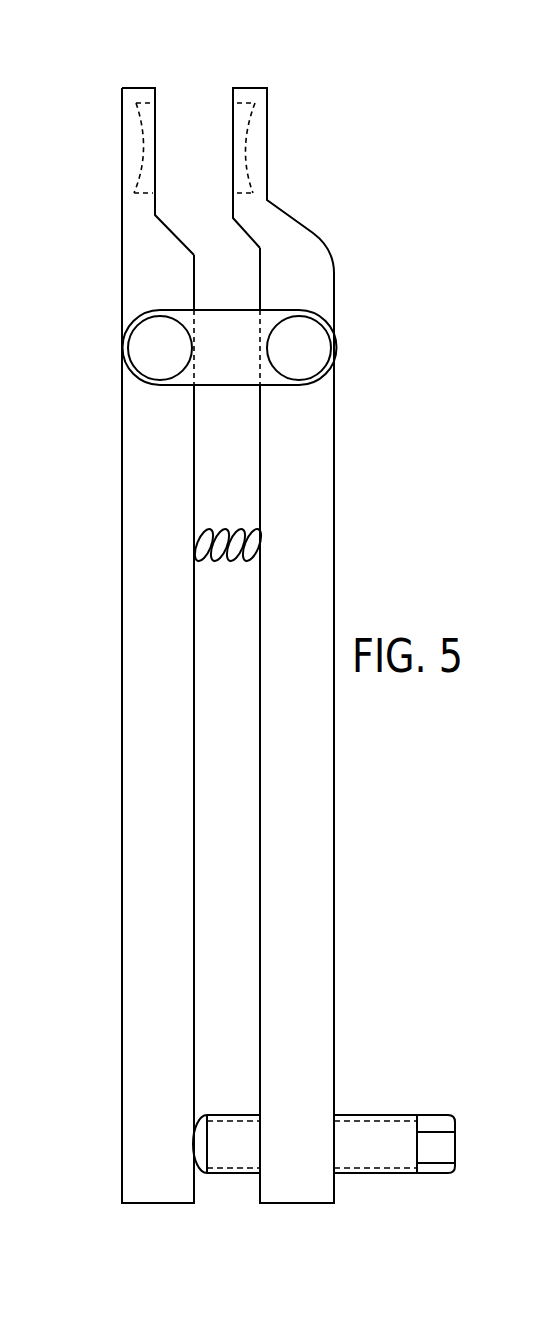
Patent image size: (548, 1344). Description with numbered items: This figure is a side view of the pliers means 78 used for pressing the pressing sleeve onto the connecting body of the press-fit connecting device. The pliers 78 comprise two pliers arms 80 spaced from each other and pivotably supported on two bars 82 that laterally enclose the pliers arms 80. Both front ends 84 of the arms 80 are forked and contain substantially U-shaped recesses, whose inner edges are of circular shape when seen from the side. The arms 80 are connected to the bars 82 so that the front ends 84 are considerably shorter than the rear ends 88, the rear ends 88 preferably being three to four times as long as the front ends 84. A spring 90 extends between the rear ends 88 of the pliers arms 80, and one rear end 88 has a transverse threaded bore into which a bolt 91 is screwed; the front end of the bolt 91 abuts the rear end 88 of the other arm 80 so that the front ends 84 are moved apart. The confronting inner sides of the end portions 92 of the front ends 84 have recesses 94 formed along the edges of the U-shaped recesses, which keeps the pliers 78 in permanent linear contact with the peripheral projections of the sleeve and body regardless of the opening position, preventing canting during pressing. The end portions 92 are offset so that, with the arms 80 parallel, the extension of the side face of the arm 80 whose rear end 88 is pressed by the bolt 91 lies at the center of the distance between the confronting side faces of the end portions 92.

The pliers means 78 is at (392, 198).
The pliers arms 80 is at (96, 453).
The bars 82 is at (230, 325).
The front ends 84 is at (137, 265).
The rear ends 88 is at (140, 848).
The spring 90 is at (217, 528).
The bolt 91 is at (370, 1158).
The end portions 92 is at (128, 119).
The recesses 94 is at (237, 117).